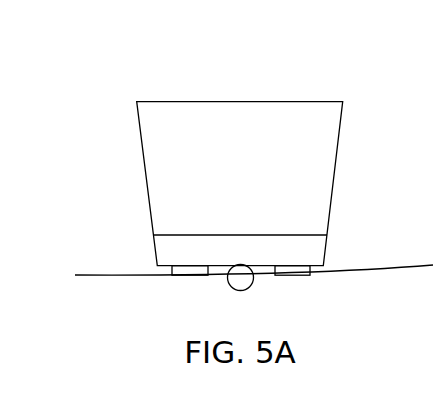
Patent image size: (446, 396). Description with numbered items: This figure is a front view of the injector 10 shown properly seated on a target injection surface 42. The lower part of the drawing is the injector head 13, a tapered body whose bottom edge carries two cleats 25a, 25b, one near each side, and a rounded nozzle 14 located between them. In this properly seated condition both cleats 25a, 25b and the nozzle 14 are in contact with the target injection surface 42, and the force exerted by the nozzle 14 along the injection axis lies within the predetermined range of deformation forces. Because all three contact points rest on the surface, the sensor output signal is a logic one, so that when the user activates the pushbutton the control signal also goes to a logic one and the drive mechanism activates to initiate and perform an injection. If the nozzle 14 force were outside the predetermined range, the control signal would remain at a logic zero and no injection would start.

The injector 10 is at (322, 67).
The injector head 13 is at (162, 248).
The nozzle 14 is at (252, 287).
The cleat 25a is at (313, 277).
The cleat 25b is at (176, 276).
The target injection surface 42 is at (130, 277).